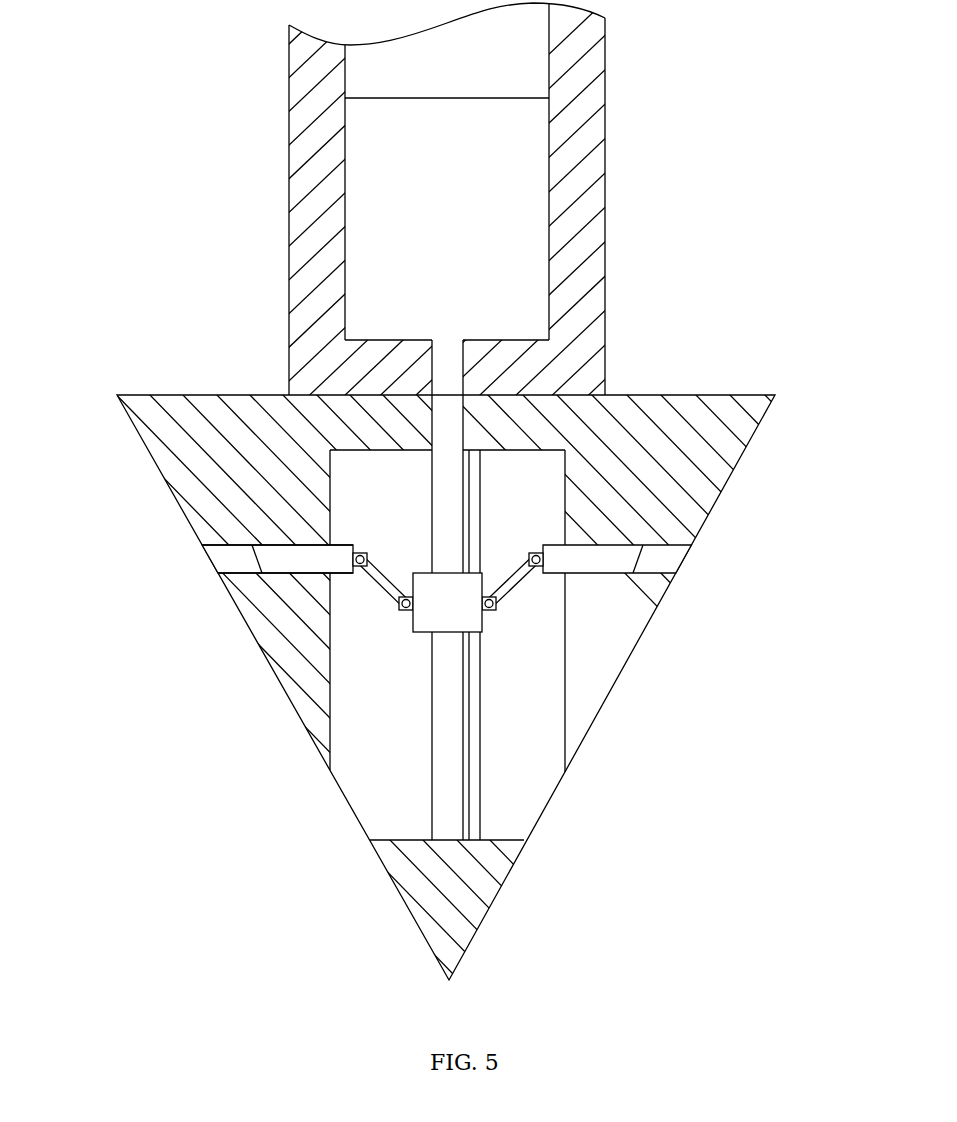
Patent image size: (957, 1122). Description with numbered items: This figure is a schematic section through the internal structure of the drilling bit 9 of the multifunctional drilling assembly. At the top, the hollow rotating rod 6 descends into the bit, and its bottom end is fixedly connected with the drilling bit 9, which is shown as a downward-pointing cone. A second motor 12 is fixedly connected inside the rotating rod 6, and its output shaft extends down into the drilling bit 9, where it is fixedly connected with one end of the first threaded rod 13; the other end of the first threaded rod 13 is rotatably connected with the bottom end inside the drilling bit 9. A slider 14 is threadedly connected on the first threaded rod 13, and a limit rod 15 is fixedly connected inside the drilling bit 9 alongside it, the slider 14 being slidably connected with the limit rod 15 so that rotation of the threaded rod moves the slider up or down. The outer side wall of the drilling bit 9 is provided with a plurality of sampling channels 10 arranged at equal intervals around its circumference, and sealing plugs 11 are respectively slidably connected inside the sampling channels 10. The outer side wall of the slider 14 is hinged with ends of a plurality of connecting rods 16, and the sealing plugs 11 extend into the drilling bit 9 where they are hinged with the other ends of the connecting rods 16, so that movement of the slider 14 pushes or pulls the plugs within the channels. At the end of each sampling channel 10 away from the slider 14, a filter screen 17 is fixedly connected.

The rotating rod 6 is at (312, 305).
The drilling bit 9 is at (625, 620).
The sampling channels 10 is at (233, 556).
The sealing plugs 11 is at (277, 558).
The second motor 12 is at (403, 275).
The first threaded rod 13 is at (447, 497).
The slider 14 is at (432, 622).
The limit rod 15 is at (480, 737).
The connecting rods 16 is at (383, 589).
The filter screen 17 is at (683, 555).